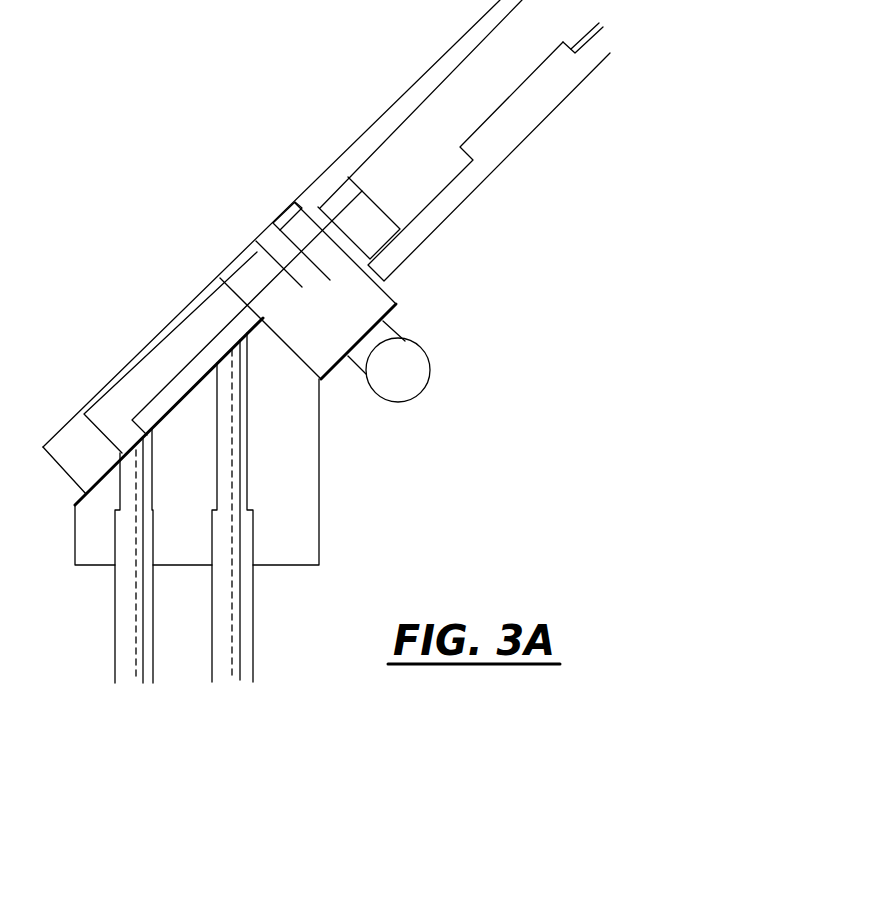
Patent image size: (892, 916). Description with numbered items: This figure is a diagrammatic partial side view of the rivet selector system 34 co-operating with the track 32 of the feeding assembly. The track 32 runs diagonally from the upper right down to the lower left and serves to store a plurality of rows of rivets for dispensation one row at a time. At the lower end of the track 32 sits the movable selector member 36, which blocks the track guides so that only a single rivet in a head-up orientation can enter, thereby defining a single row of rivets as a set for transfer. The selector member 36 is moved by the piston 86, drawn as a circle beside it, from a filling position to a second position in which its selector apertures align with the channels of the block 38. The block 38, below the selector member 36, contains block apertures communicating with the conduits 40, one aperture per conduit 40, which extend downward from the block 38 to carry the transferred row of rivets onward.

The track 32 is at (378, 143).
The selector system 34 is at (172, 243).
The movable selector member 36 is at (270, 248).
The block 38 is at (290, 462).
The conduits 40 is at (123, 640).
The piston 86 is at (415, 368).